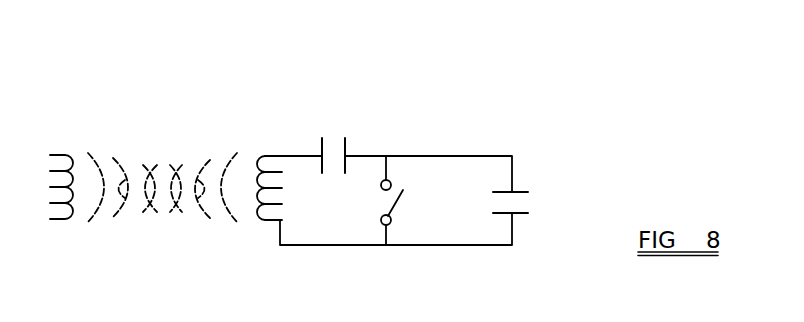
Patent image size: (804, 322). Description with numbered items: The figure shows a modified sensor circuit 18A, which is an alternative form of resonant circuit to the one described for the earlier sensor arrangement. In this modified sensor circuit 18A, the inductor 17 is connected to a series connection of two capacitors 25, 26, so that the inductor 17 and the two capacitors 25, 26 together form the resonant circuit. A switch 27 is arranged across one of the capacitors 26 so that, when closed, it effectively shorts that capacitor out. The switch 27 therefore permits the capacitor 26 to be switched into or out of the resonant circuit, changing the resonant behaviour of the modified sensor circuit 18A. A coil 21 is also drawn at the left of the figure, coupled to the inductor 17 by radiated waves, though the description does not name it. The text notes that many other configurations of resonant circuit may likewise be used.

The inductor 17 is at (263, 221).
The modified sensor circuit 18A is at (461, 105).
The transmitter coil 21 is at (70, 157).
The capacitor 25 is at (345, 138).
The capacitor 26 is at (518, 215).
The switch 27 is at (398, 203).